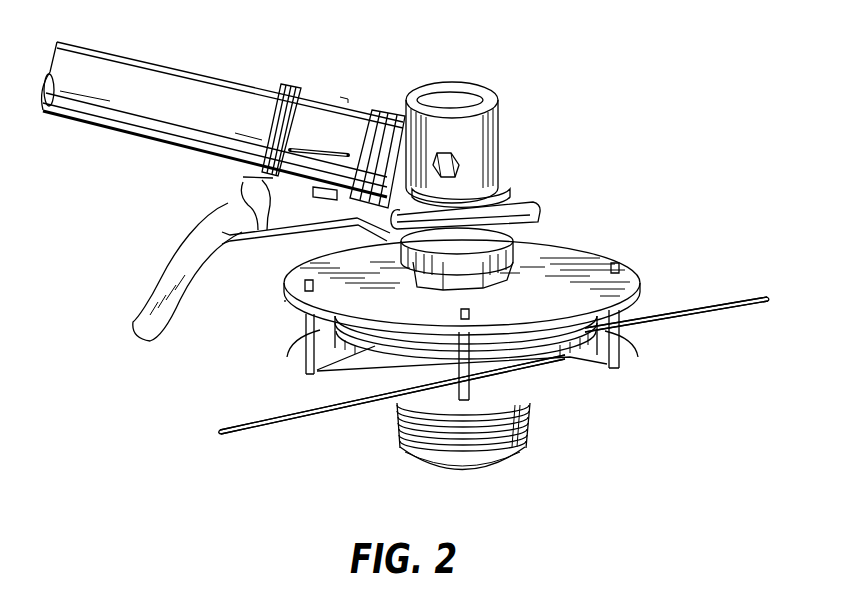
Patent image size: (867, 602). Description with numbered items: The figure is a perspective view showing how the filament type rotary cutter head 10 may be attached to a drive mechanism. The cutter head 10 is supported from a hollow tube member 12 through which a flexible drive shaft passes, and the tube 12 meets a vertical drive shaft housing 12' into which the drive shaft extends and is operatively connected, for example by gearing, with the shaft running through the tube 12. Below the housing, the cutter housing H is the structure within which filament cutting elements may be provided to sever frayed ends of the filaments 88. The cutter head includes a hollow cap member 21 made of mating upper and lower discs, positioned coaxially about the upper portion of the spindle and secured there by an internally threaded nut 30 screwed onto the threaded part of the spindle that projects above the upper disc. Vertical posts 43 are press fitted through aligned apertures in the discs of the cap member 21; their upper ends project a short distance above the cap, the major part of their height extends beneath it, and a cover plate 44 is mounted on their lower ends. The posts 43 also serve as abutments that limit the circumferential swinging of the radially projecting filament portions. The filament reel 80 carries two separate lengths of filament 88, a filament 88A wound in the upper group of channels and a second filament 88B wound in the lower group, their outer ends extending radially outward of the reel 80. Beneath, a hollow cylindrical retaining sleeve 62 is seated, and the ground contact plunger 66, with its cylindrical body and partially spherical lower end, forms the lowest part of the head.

The hollow tube member 12 is at (223, 110).
The vertical drive shaft housing 12' is at (489, 155).
The cutter housing H is at (178, 258).
The internally threaded nut 30 is at (520, 262).
The hollow cap member 21 is at (612, 255).
The filament type rotary cutter head 10 is at (277, 291).
The post 43 is at (300, 343).
The filament reel 80 is at (302, 383).
The cover plate 44 is at (605, 400).
The retaining sleeve 62 is at (528, 432).
The ground contact plunger 66 is at (440, 458).
The filament 88 is at (230, 435).
The filament 88A is at (307, 415).
The filament 88B is at (740, 305).